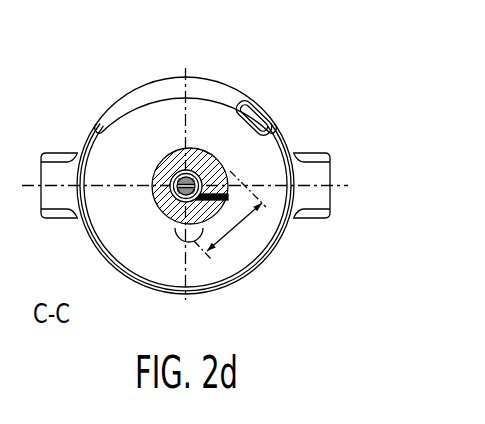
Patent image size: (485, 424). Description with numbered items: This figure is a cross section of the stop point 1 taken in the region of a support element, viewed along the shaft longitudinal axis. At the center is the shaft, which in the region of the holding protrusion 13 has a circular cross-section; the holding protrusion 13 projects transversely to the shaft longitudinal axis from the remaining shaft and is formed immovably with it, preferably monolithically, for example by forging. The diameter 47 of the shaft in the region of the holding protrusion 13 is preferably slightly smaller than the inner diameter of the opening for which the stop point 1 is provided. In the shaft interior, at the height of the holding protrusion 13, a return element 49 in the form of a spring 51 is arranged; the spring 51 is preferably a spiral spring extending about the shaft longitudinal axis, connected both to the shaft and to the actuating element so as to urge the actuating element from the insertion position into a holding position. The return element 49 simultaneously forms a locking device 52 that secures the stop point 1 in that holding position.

The stop point 1 is at (255, 63).
The holding protrusion 13 is at (184, 243).
The diameter 47 is at (235, 226).
The return element 49 is at (167, 151).
The spring 51 is at (167, 151).
The locking device 52 is at (164, 160).